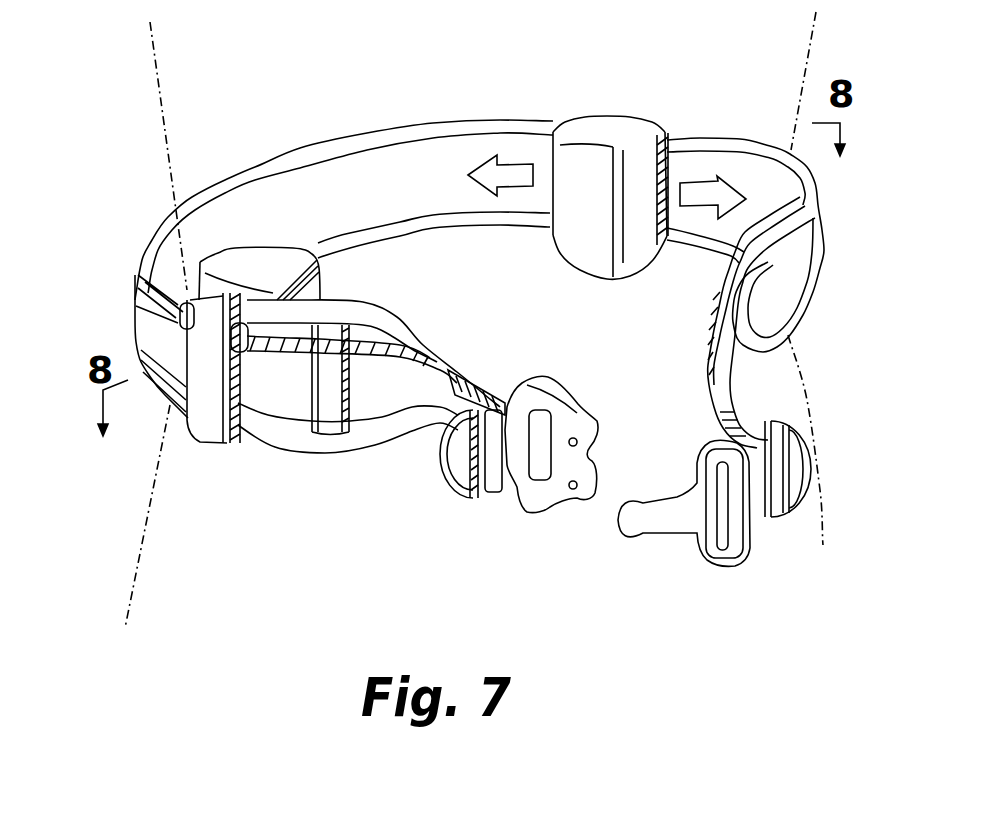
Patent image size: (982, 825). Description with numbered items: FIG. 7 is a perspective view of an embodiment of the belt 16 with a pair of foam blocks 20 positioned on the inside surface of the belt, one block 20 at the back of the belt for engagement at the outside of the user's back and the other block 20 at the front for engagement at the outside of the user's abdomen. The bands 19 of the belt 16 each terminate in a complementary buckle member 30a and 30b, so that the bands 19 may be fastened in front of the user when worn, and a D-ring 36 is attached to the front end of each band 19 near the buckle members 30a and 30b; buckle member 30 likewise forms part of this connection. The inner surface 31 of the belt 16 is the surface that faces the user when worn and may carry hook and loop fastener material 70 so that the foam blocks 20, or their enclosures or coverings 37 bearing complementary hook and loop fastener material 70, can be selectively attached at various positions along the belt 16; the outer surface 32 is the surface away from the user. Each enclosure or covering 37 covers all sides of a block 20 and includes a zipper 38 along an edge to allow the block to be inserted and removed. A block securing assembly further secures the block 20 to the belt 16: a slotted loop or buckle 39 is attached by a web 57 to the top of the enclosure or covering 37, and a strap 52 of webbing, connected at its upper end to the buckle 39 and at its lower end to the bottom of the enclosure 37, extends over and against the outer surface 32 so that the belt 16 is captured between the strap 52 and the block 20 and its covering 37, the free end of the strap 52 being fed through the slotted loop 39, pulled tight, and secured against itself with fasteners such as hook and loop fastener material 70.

The belt 16 is at (333, 84).
The bands 19 is at (384, 408).
The foam blocks 20 is at (383, 166).
The buckle member 30 is at (276, 280).
The complementary buckle member 30a is at (710, 560).
The complementary buckle member 30b is at (530, 508).
The inner surface 31 is at (482, 203).
The outer surface 32 is at (272, 420).
The D-ring 36 is at (455, 490).
The enclosure or covering 37 is at (593, 220).
The zipper 38 is at (670, 143).
The slotted loop or buckle 39 is at (185, 320).
The strap 52 is at (213, 417).
The web 57 is at (205, 290).
The hook and loop fastener material 70 is at (366, 203).